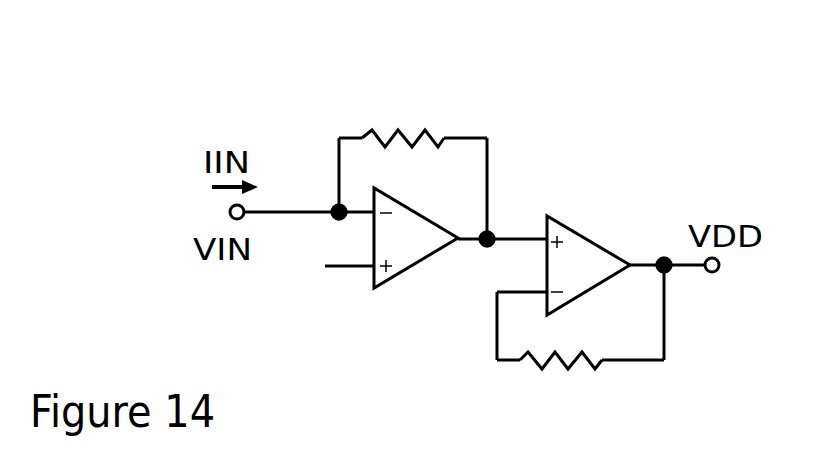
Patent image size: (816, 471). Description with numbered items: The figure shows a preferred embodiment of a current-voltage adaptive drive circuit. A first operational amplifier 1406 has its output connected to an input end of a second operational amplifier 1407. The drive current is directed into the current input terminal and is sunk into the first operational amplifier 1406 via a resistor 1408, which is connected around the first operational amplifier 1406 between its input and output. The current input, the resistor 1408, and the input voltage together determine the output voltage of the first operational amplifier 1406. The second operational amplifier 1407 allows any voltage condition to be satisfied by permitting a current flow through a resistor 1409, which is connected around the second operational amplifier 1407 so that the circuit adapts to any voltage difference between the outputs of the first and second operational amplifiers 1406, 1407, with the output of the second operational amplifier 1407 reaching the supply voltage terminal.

The first operational amplifier 1406 is at (398, 297).
The second operational amplifier 1407 is at (580, 223).
The resistor 1408 is at (398, 130).
The resistor 1409 is at (575, 378).